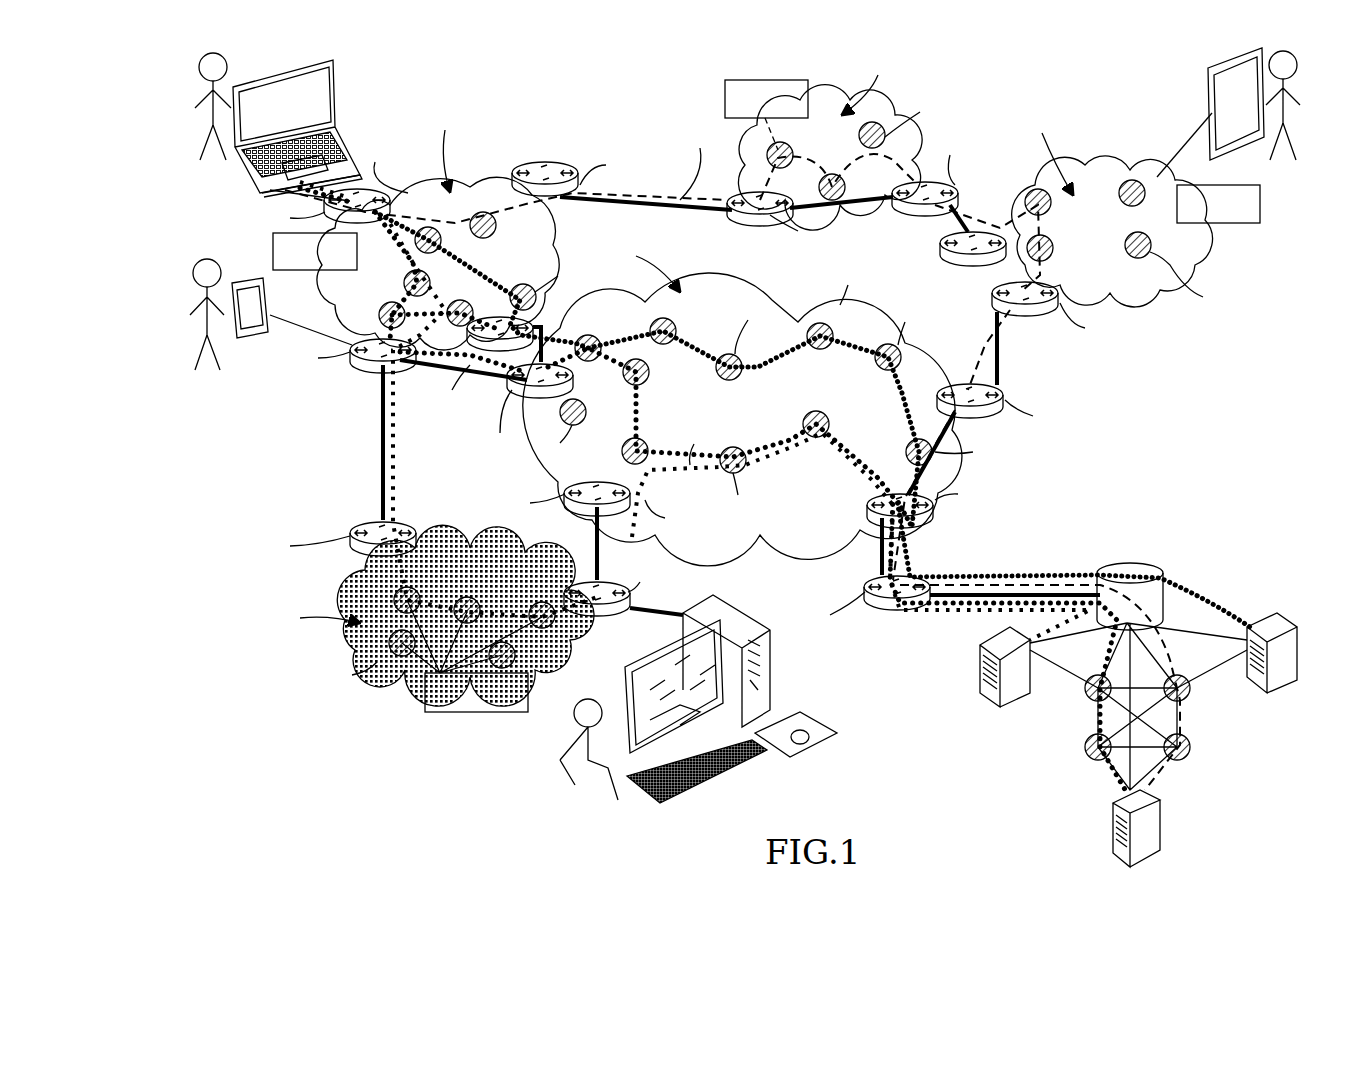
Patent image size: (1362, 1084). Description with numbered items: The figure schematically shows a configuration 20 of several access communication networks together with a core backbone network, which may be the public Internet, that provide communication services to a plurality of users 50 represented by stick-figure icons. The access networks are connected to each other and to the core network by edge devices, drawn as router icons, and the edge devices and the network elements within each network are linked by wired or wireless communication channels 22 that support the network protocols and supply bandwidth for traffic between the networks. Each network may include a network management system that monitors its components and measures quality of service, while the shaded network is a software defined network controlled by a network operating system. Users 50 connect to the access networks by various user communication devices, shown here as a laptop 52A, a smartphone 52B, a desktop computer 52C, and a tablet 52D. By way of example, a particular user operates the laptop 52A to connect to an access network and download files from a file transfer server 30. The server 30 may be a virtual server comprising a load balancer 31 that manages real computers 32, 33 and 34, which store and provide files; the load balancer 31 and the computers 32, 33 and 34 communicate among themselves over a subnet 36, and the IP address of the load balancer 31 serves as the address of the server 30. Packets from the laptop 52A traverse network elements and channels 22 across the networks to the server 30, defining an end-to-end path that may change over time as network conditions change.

The configuration 20 is at (618, 108).
The communication channels 22 is at (382, 440).
The file transfer server 30 is at (950, 722).
The load balancer 31 is at (1115, 565).
The real computer 32 is at (980, 640).
The real computer 33 is at (1155, 825).
The real computer 34 is at (1280, 690).
The subnet 36 is at (1078, 722).
The users 50 is at (227, 67).
The laptop 52A is at (340, 92).
The smartphone 52B is at (243, 345).
The desktop computer 52C is at (740, 625).
The tablet 52D is at (1205, 100).